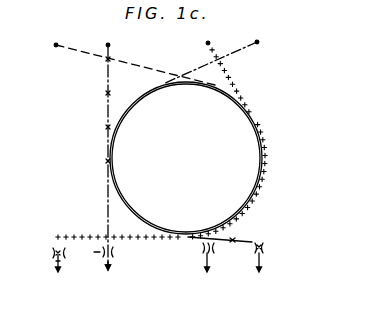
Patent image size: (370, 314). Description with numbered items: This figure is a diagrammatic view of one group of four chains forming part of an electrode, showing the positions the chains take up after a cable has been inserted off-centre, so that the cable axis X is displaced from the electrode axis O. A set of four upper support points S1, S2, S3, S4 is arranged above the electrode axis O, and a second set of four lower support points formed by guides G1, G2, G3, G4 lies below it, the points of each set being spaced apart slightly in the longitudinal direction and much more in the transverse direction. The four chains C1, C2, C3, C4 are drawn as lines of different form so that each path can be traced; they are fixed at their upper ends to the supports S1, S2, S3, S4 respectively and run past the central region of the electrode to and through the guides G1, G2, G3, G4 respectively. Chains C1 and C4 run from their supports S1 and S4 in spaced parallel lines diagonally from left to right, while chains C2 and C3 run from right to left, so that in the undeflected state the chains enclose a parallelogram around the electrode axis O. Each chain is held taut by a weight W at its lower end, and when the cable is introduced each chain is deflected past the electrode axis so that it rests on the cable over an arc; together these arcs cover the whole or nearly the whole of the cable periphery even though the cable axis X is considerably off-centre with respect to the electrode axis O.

The support point S1 is at (55, 37).
The support point S2 is at (262, 33).
The support point S3 is at (211, 35).
The support point S4 is at (112, 37).
The chain C1 is at (139, 69).
The chain C2 is at (243, 56).
The chain C3 is at (237, 85).
The chain C4 is at (107, 79).
The electrode axis O is at (157, 158).
The cable axis X is at (172, 158).
The guide G1 is at (223, 248).
The guide G2 is at (116, 252).
The guide G3 is at (67, 256).
The guide G4 is at (266, 250).
The weight W is at (155, 277).